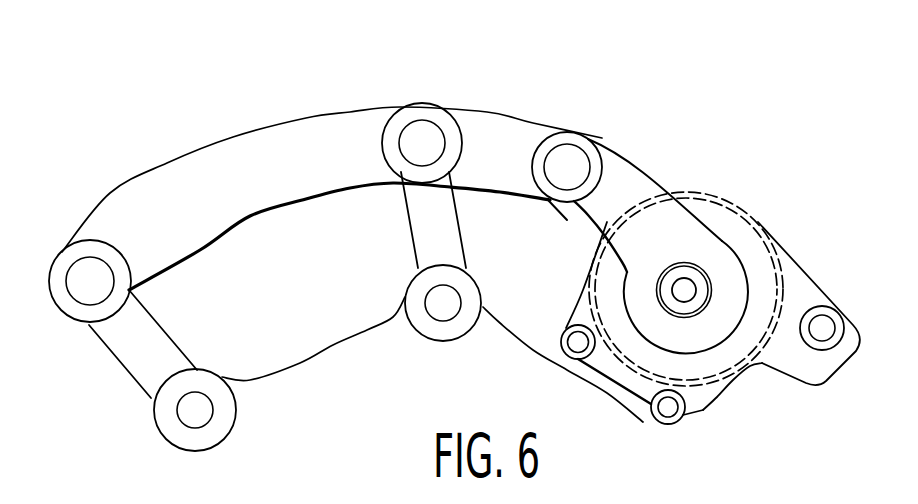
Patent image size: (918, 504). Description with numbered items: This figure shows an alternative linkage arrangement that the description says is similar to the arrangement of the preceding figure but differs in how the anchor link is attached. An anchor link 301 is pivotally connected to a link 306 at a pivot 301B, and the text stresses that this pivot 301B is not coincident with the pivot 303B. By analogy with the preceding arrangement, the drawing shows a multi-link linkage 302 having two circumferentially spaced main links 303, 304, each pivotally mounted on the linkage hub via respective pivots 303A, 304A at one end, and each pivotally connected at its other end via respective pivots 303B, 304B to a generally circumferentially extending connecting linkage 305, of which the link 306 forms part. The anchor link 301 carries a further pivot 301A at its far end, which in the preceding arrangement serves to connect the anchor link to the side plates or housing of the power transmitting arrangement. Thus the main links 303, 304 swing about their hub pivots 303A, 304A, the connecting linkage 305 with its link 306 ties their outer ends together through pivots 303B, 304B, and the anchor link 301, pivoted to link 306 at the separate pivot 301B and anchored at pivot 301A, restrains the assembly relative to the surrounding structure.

The anchor link 301 is at (696, 247).
The pivot 301A is at (688, 278).
The pivot 301B is at (572, 150).
The multi-link linkage 302 is at (352, 223).
The main link 303 is at (424, 222).
The pivot 303A is at (433, 340).
The pivot 303B is at (422, 127).
The main link 304 is at (164, 345).
The pivot 304A is at (200, 413).
The pivot 304B is at (90, 293).
The connecting linkage 305 is at (332, 113).
The link 306 is at (193, 170).